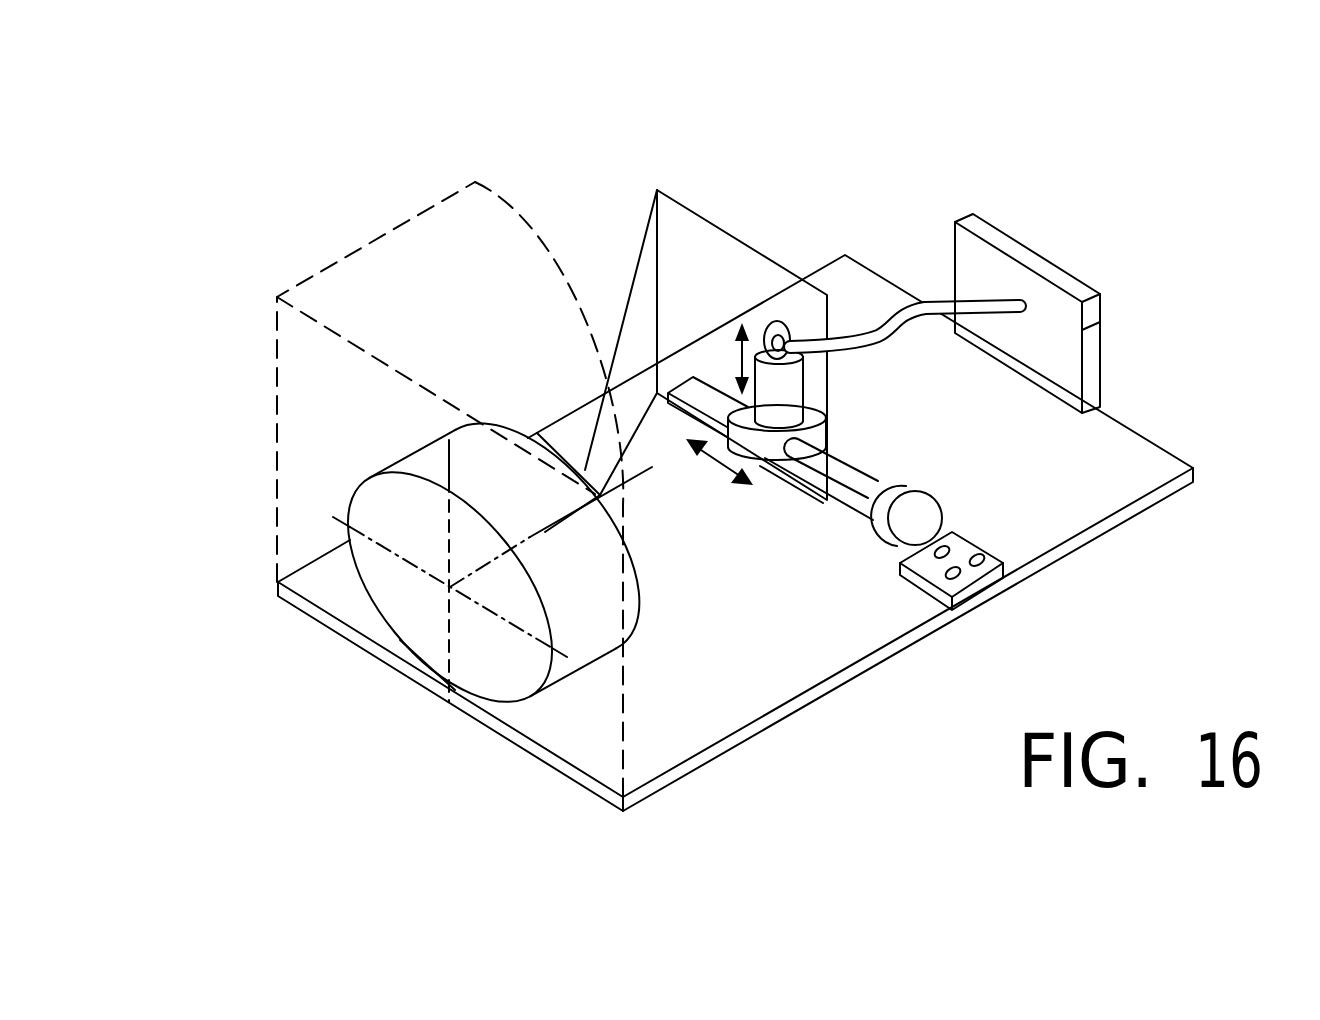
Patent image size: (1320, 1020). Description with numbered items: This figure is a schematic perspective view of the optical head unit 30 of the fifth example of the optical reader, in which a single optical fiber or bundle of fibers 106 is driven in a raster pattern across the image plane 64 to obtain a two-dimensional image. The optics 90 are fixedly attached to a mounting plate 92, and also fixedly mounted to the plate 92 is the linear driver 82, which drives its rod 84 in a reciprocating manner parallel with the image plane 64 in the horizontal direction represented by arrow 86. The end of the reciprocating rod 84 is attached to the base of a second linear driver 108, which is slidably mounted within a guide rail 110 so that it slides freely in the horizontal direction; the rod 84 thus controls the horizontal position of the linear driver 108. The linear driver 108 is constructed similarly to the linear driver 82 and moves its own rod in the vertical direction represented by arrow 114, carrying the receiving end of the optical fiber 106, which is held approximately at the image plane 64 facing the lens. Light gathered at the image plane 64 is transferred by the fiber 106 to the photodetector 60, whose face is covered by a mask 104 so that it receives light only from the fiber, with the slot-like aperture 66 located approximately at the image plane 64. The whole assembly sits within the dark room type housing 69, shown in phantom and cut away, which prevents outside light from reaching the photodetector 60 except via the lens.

The optical head unit 30 is at (345, 176).
The photodetector 60 is at (1027, 243).
The image plane 64 is at (678, 203).
The aperture 66 is at (758, 310).
The dark room type housing 69 is at (360, 290).
The linear driver 82 is at (928, 515).
The rod 84 is at (868, 476).
The arrow 86 is at (717, 460).
The optics 90 is at (432, 452).
The mounting plate 92 is at (750, 662).
The mask 104 is at (1073, 325).
The optical fiber 106 is at (882, 333).
The second linear driver 108 is at (771, 443).
The guide rail 110 is at (660, 313).
The arrow 114 is at (712, 382).